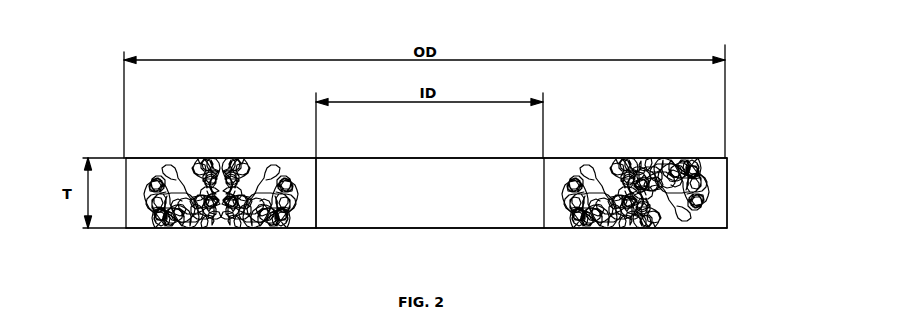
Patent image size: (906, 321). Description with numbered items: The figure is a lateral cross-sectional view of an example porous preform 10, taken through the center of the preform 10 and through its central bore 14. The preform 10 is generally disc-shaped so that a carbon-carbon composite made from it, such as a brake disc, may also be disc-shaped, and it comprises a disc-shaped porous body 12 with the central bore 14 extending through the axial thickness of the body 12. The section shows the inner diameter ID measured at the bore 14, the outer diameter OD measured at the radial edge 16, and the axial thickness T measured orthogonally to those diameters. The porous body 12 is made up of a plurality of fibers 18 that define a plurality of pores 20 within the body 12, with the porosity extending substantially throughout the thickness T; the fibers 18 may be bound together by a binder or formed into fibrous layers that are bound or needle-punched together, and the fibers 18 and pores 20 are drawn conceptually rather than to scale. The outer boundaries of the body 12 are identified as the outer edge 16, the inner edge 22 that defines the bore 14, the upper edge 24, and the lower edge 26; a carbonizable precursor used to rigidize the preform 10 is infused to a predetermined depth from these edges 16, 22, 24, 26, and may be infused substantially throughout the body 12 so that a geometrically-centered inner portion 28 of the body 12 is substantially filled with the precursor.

The preform 10 is at (112, 136).
The porous body 12 is at (736, 179).
The central bore 14 is at (474, 167).
The radial edge 16 is at (727, 205).
The fibers 18 is at (661, 218).
The pores 20 is at (580, 177).
The inner edge 22 is at (317, 192).
The upper edge 24 is at (222, 158).
The lower edge 26 is at (243, 228).
The inner portion 28 is at (223, 192).